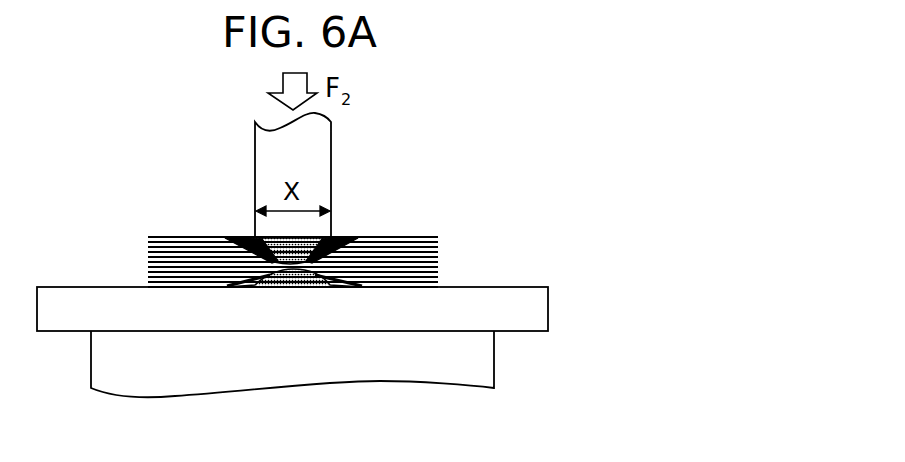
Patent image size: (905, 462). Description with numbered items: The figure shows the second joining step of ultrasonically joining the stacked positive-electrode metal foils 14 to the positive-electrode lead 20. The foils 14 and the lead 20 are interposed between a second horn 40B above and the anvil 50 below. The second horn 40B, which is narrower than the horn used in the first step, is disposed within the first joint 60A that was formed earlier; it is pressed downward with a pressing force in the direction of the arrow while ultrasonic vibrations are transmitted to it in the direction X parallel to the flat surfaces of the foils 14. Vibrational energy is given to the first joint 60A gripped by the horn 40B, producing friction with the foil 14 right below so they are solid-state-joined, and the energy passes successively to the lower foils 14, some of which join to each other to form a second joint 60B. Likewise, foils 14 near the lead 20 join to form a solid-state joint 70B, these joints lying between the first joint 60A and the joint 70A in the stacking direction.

The stacked positive-electrode metal foils 14 is at (447, 237).
The positive-electrode lead 20 is at (548, 308).
The second horn 40B is at (331, 168).
The anvil 50 is at (494, 362).
The first joint 60A is at (248, 238).
The second joint 60B is at (302, 253).
The joint 70A is at (248, 287).
The solid-state joint 70B is at (292, 287).